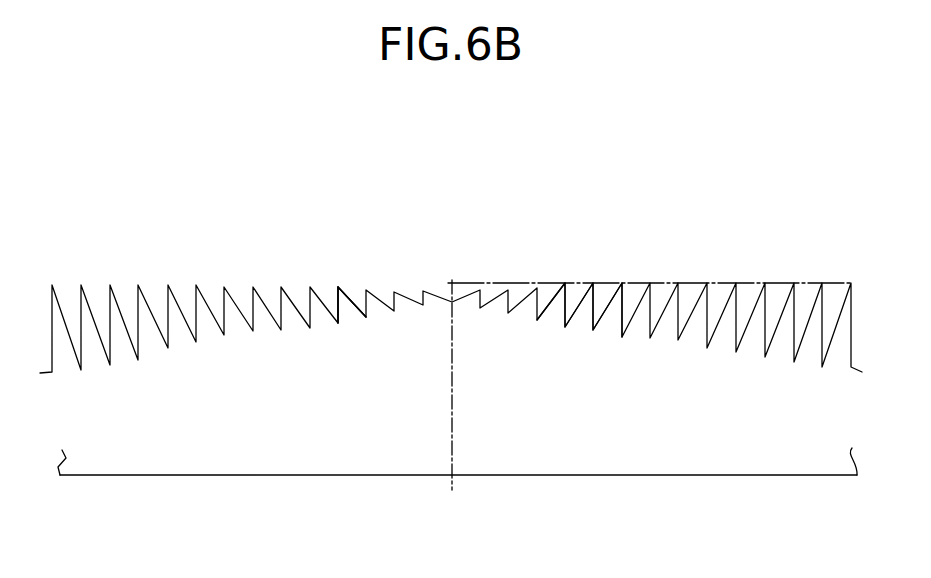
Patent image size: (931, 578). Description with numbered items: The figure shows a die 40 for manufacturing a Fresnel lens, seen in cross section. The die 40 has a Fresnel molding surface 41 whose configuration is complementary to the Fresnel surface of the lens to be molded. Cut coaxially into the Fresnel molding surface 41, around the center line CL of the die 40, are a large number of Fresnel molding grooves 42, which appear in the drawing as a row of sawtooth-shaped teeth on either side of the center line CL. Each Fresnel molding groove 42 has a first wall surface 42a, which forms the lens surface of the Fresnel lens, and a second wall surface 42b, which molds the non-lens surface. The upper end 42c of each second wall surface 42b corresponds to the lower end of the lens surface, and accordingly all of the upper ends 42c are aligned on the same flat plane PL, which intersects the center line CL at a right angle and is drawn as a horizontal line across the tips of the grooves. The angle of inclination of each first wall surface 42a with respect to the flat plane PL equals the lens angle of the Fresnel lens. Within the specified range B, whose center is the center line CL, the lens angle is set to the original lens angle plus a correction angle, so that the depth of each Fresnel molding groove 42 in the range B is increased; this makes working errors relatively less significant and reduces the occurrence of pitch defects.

The die 40 is at (268, 463).
The Fresnel molding surface 41 is at (700, 260).
The Fresnel molding groove 42 is at (348, 274).
The first wall surface 42a is at (350, 286).
The second wall surface 42b is at (358, 290).
The upper end of second wall surface 42c is at (620, 283).
The flat plane PL is at (745, 282).
The center line CL is at (452, 450).
The specified range B is at (648, 290).